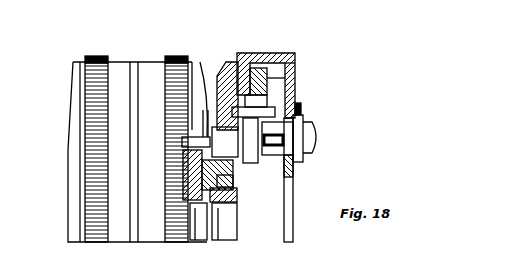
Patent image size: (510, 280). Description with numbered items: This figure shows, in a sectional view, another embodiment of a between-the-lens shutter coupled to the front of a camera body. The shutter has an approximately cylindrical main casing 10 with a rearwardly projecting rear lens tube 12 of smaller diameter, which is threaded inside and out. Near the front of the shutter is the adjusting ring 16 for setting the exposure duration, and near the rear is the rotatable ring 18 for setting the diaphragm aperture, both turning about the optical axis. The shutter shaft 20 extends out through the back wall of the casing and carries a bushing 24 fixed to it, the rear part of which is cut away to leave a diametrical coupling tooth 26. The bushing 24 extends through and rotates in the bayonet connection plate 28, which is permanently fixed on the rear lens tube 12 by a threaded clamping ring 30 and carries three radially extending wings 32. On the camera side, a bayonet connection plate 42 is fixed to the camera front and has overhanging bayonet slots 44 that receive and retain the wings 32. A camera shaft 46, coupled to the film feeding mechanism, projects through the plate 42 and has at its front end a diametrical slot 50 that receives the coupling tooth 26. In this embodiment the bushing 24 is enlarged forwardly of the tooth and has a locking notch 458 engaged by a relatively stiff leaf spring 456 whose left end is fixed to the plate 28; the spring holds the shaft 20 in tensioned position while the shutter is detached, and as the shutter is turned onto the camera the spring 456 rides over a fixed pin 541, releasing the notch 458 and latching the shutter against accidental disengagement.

The main casing 10 is at (135, 62).
The rear lens tube 12 is at (232, 195).
The adjusting ring 16 is at (88, 57).
The rotatable ring 18 is at (175, 56).
The shaft 20 is at (205, 75).
The bushing 24 is at (250, 165).
The coupling tooth 26 is at (295, 168).
The bayonet connection plate 28 is at (228, 75).
The threaded clamping ring 30 is at (236, 181).
The radially extending wings 32 is at (285, 80).
The bayonet connection plate 42 is at (295, 65).
The bayonet slots 44 is at (255, 53).
The shaft 46 is at (317, 128).
The diametrical slot 50 is at (312, 143).
The leaf spring 456 is at (256, 80).
The locking notch 458 is at (250, 120).
The fixed pin 541 is at (298, 108).